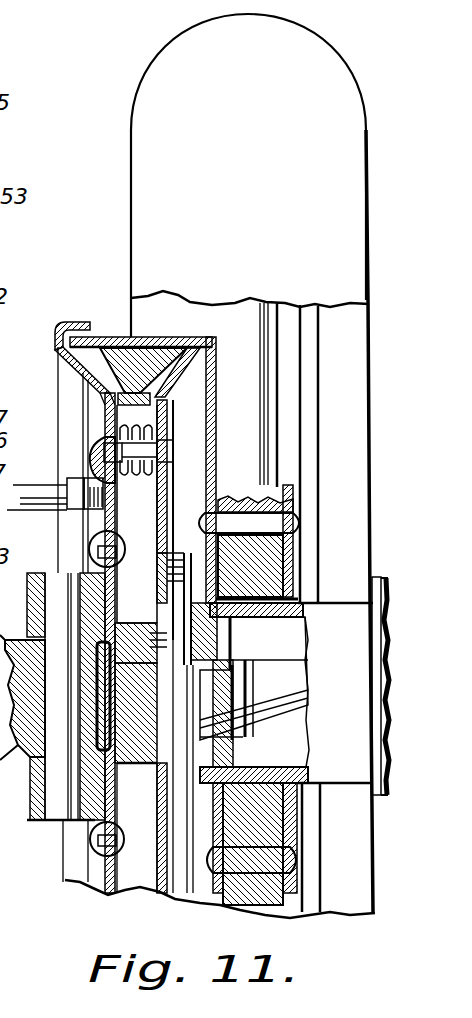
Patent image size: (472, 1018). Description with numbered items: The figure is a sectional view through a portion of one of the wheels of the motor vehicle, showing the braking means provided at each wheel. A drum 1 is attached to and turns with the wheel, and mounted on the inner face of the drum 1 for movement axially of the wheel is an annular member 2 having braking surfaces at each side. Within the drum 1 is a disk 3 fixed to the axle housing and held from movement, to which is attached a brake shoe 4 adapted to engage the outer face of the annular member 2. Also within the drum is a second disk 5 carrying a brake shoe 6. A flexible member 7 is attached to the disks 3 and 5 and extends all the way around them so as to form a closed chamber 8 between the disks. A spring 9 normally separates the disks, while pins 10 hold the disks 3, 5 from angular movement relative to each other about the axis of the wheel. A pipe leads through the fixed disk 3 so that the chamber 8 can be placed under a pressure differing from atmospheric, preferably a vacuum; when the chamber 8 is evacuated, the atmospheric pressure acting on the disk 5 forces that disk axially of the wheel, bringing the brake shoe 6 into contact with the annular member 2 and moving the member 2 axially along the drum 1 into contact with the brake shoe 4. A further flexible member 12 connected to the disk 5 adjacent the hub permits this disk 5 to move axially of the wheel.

The drum 1 is at (157, 337).
The annular member 2 is at (115, 343).
The disk 3 is at (108, 414).
The brake shoe 4 is at (73, 352).
The disk 5 is at (160, 483).
The brake shoe 6 is at (227, 466).
The flexible member 7 is at (216, 396).
The closed chamber 8 is at (133, 531).
The spring 9 is at (142, 473).
The pins 10 is at (173, 447).
The flexible member 12 is at (254, 692).